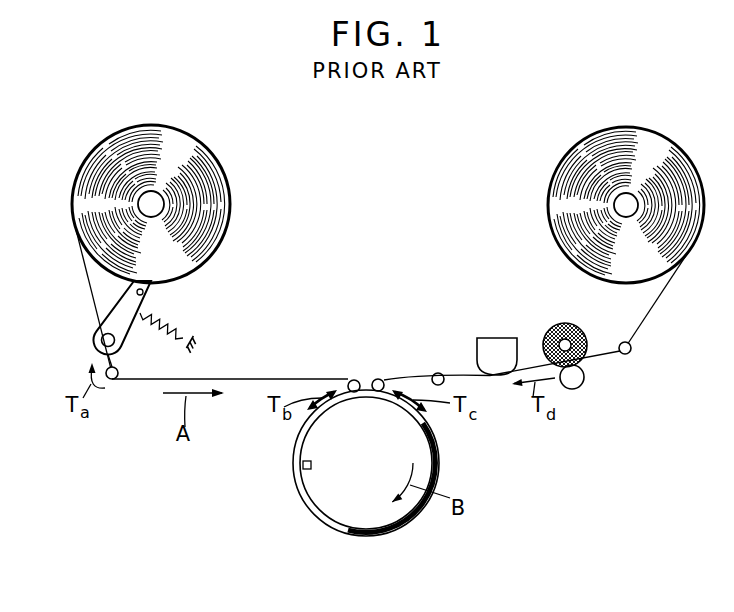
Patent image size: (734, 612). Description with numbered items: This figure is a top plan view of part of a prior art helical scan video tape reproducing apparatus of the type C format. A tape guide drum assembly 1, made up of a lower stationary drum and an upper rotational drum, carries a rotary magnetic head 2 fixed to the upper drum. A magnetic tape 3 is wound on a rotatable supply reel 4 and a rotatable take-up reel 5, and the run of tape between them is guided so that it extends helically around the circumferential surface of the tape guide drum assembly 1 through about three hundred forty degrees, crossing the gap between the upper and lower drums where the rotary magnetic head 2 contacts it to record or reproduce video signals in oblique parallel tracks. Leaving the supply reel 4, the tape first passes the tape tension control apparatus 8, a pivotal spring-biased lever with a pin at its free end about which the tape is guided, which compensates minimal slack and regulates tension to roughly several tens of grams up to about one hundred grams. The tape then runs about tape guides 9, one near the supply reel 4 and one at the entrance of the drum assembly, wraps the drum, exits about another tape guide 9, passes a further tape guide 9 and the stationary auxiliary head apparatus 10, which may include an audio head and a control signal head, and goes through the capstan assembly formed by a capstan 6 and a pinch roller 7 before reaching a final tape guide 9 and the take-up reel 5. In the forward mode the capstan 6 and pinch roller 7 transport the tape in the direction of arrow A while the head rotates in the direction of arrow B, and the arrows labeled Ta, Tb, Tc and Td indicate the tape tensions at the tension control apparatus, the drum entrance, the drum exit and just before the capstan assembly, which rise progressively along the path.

The tape guide drum assembly 1 is at (366, 512).
The rotary magnetic head 2 is at (303, 468).
The magnetic tape 3 is at (245, 378).
The supply reel 4 is at (192, 155).
The take-up reel 5 is at (665, 153).
The capstan 6 is at (578, 388).
The pinch roller 7 is at (566, 325).
The tape tension control apparatus 8 is at (103, 331).
The tape guide 9 is at (114, 381).
The stationary auxiliary head apparatus 10 is at (494, 345).